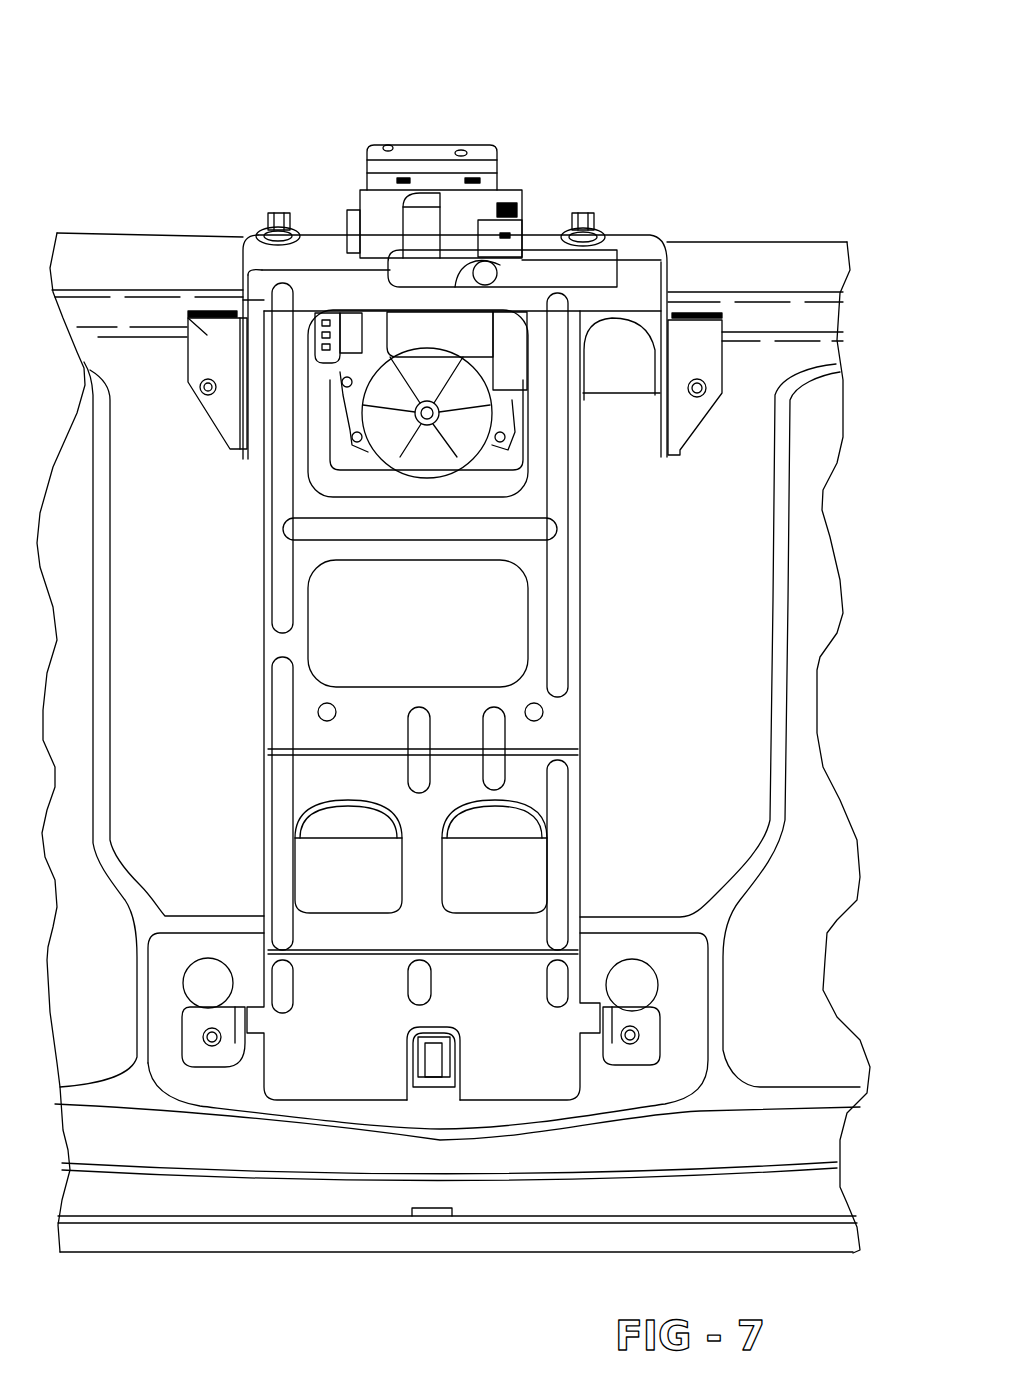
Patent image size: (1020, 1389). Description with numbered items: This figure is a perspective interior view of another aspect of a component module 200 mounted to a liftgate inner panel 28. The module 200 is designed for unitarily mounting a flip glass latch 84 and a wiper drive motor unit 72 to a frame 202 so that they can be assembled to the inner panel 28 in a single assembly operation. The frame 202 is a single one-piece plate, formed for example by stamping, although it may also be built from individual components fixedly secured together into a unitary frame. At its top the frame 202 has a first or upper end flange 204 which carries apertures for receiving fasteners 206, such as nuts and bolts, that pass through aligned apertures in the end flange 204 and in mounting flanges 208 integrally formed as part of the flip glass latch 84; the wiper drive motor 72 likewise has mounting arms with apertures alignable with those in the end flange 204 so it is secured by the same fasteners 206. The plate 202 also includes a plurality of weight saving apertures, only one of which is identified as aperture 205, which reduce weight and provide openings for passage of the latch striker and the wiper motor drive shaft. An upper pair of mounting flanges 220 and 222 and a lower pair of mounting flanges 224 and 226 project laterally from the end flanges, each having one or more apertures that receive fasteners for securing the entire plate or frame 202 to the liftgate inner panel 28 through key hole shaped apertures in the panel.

The module 200 is at (246, 96).
The inner panel 28 is at (824, 263).
The wiper drive motor unit 72 is at (390, 440).
The flip glass latch 84 is at (477, 145).
The frame 202 is at (240, 250).
The upper end flange 204 is at (605, 262).
The weight saving aperture 205 is at (330, 906).
The fasteners 206 is at (276, 212).
The mounting flanges 208 is at (308, 235).
The upper mounting flange 220 is at (220, 332).
The upper mounting flange 222 is at (697, 337).
The lower mounting flange 224 is at (203, 1052).
The lower mounting flange 226 is at (643, 1053).